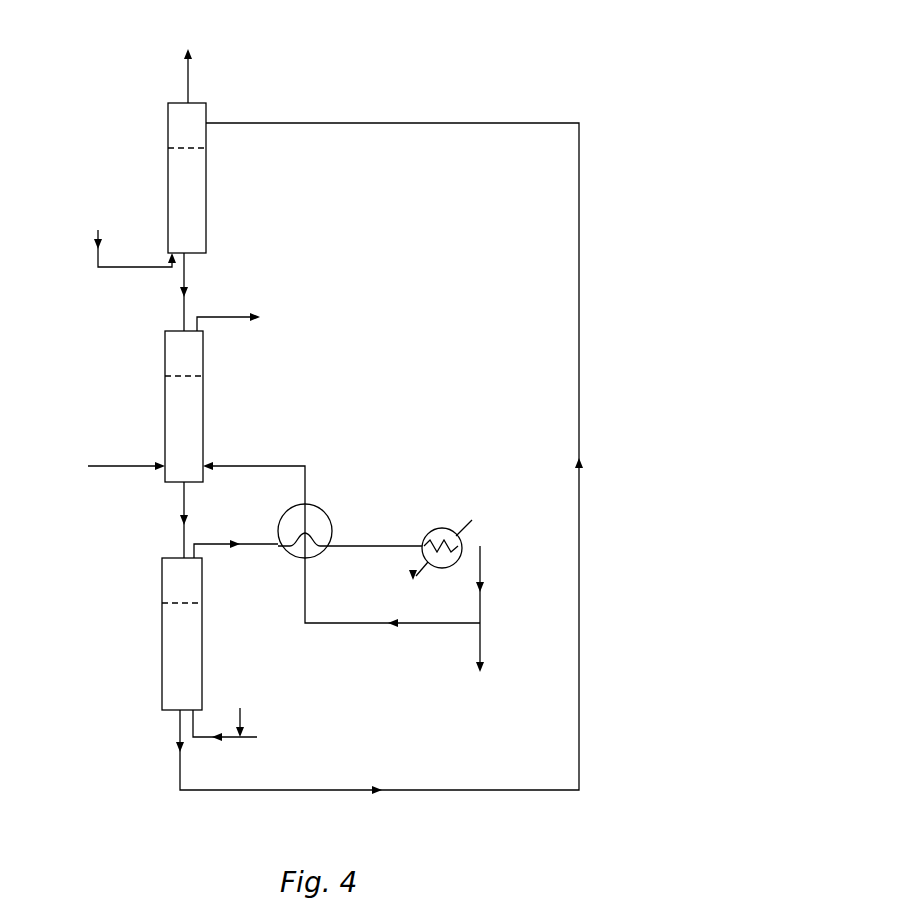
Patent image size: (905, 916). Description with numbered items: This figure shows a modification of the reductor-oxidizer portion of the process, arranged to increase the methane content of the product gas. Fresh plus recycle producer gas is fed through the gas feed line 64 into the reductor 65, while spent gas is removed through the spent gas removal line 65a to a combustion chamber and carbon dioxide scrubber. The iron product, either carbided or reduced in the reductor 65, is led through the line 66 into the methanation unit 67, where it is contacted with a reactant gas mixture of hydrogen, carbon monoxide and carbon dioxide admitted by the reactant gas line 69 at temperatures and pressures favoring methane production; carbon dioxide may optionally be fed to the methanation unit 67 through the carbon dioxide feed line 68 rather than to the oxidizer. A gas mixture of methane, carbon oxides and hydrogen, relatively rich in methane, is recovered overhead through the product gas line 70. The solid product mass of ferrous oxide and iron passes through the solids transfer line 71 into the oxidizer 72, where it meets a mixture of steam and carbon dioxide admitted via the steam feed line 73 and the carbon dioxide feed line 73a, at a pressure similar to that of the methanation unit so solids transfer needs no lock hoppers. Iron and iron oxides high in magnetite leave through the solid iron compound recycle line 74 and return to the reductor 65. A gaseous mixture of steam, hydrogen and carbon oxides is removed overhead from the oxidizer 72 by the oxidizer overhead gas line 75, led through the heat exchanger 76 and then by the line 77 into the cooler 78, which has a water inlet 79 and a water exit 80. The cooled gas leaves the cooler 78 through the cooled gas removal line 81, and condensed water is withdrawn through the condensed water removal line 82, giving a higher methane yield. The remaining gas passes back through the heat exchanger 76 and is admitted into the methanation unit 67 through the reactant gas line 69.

The gas feed line 64 is at (112, 267).
The reductor 65 is at (202, 200).
The spent gas removal line 65a is at (188, 77).
The line to methanation unit 66 is at (184, 311).
The methanation unit 67 is at (203, 428).
The carbon dioxide feed line 68 is at (143, 466).
The reactant gas line 69 is at (276, 466).
The product gas line 70 is at (208, 319).
The solids transfer line 71 is at (180, 503).
The oxidizer 72 is at (200, 653).
The steam feed line 73 is at (205, 739).
The carbon dioxide feed line to oxidizer 73a is at (238, 726).
The solid iron compound recycle line 74 is at (578, 278).
The oxidizer overhead gas line 75 is at (256, 546).
The heat exchanger 76 is at (329, 527).
The line from heat exchanger to cooler 77 is at (375, 546).
The cooler 78 is at (459, 564).
The water inlet 79 is at (462, 521).
The water exit 80 is at (418, 568).
The cooled gas removal line 81 is at (480, 570).
The condensed water removal line 82 is at (480, 648).